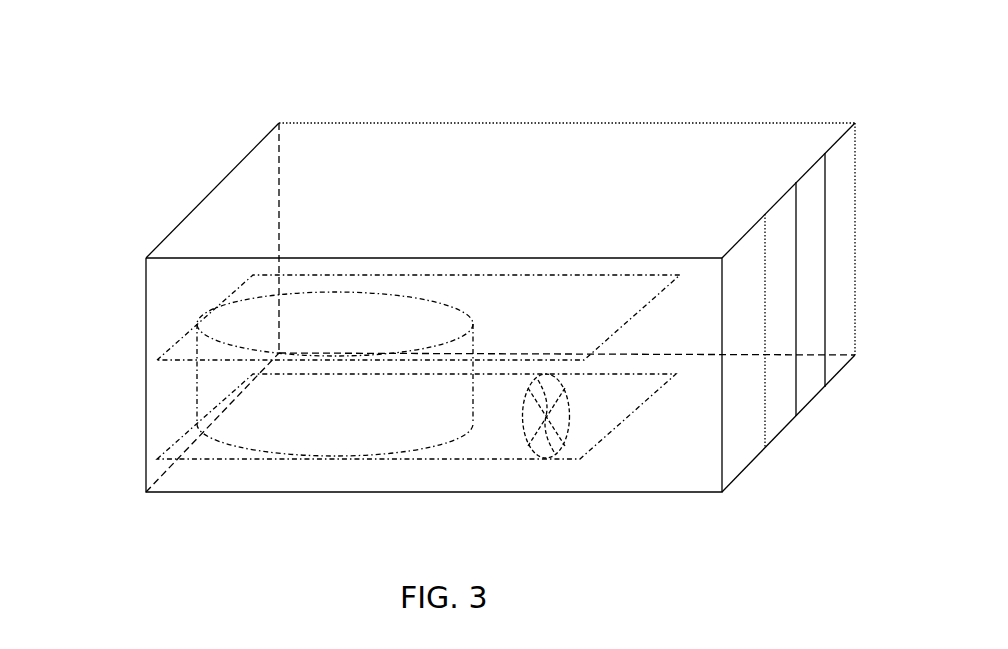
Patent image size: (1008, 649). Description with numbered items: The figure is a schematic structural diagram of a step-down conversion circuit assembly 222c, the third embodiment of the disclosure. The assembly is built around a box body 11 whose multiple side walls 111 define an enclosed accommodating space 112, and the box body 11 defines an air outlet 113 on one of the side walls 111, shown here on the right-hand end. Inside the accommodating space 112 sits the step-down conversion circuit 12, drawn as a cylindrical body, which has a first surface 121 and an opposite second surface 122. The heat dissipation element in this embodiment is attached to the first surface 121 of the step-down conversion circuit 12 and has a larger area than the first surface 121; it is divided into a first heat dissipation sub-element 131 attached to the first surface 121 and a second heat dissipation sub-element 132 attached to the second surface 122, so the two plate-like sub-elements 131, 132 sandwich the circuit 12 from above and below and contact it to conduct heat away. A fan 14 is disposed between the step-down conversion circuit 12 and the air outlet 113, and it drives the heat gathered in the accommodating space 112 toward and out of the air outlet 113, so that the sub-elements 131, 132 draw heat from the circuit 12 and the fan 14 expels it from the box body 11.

The step-down conversion circuit assembly 222c is at (480, 83).
The box body 11 is at (655, 123).
The side walls 111 is at (298, 132).
The accommodating space 112 is at (658, 453).
The air outlet 113 is at (740, 408).
The step-down conversion circuit 12 is at (205, 400).
The first surface 121 is at (317, 332).
The second surface 122 is at (327, 460).
The first heat dissipation sub-element 131 is at (602, 310).
The second heat dissipation sub-element 132 is at (472, 423).
The fan 14 is at (523, 420).